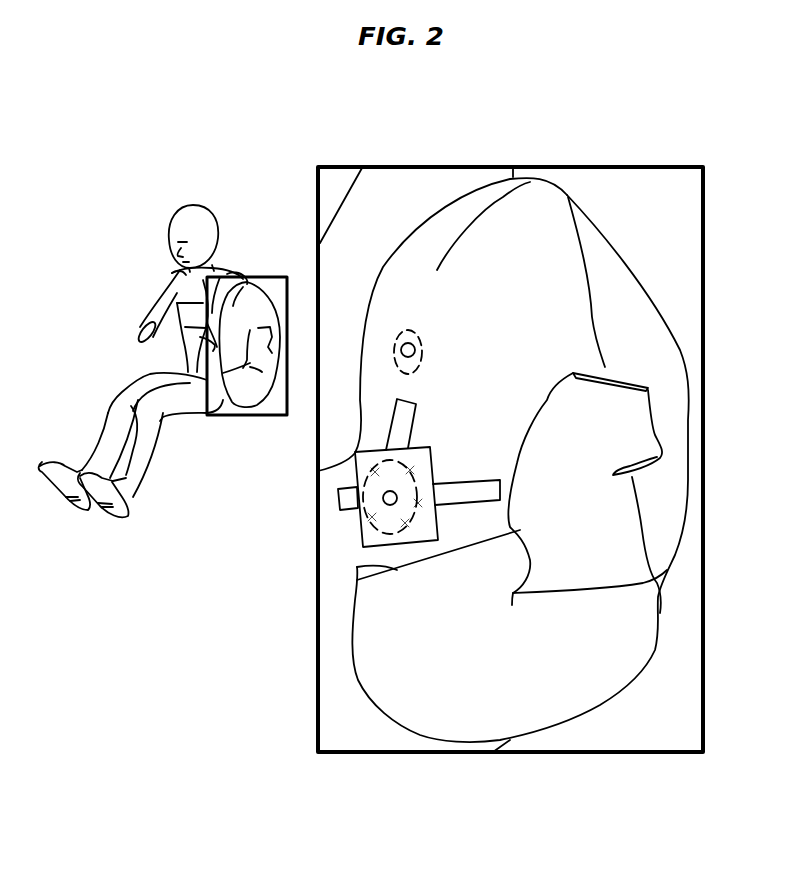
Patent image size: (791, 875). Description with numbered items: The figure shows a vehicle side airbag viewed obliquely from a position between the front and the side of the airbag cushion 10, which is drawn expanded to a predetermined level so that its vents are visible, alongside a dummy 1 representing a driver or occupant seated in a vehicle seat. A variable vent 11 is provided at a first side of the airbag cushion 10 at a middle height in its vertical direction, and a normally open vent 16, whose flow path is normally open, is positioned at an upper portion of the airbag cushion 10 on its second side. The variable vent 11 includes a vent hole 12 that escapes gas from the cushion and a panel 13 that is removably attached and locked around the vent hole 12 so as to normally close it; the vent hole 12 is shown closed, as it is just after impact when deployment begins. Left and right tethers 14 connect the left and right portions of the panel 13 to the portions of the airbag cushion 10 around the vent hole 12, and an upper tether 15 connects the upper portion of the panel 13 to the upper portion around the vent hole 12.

The dummy 1 is at (408, 192).
The airbag cushion 10 is at (255, 387).
The variable vent 11 is at (402, 555).
The vent hole 12 is at (388, 498).
The panel 13 is at (356, 483).
The left and right tethers 14 is at (462, 488).
The upper tether 15 is at (407, 420).
The normally open vent 16 is at (410, 346).